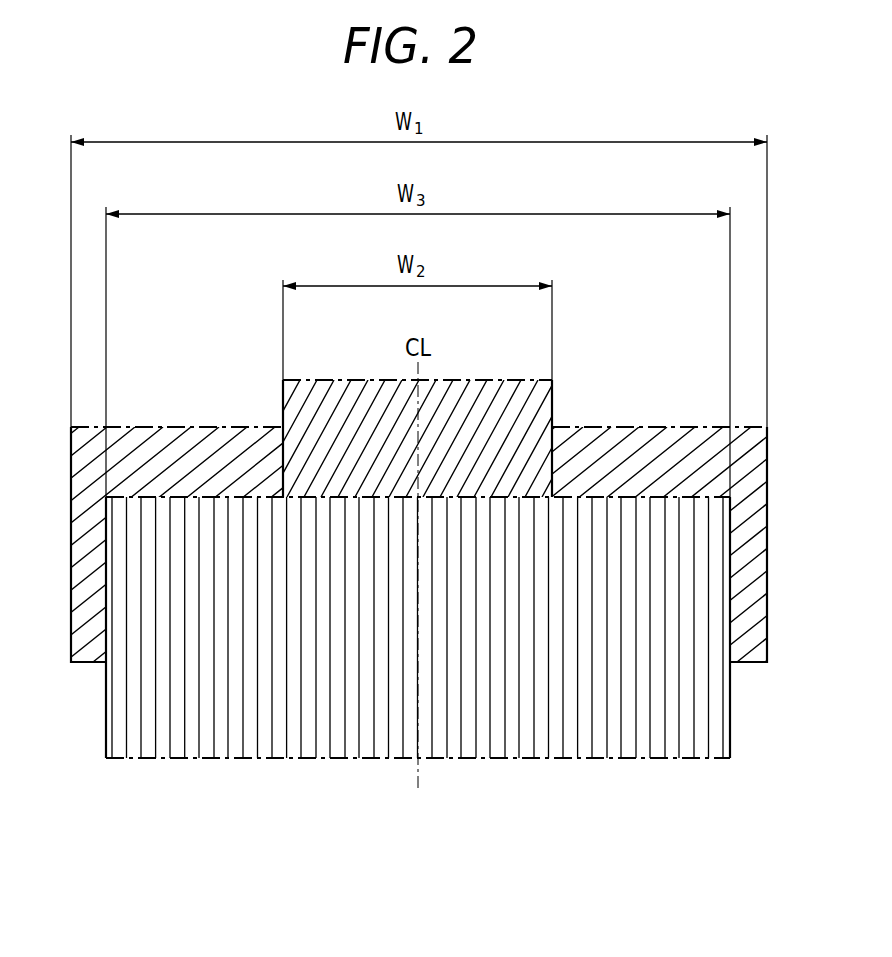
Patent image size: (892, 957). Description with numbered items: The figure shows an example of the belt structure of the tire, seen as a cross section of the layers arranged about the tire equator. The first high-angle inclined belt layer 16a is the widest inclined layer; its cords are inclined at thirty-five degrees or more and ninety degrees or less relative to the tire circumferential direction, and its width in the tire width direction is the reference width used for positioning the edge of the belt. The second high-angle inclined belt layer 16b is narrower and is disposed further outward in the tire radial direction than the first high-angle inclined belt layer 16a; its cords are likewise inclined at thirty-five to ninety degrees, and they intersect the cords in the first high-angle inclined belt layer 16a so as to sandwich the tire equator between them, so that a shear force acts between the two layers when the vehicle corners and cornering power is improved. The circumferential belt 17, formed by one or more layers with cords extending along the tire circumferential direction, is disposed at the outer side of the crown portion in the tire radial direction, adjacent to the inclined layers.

The first high-angle inclined belt layer 16a is at (655, 438).
The second high-angle inclined belt layer 16b is at (483, 395).
The circumferential belt 17 is at (498, 743).